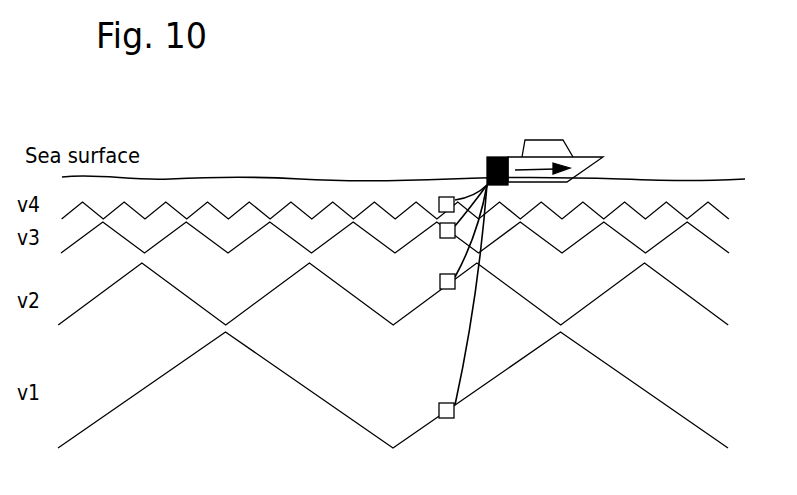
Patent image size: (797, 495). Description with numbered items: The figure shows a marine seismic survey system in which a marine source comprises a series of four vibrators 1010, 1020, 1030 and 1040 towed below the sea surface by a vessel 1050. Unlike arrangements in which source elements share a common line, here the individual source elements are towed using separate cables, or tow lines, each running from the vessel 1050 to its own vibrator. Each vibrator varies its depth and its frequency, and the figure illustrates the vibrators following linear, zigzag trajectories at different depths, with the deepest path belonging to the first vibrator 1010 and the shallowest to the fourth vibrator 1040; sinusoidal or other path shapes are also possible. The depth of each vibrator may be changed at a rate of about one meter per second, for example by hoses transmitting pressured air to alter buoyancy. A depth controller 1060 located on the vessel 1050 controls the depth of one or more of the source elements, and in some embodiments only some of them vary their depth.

The vibrator 1010 is at (444, 418).
The vibrator 1020 is at (445, 289).
The vibrator 1030 is at (444, 232).
The vibrator 1040 is at (446, 197).
The vessel 1050 is at (587, 155).
The depth controller 1060 is at (493, 157).